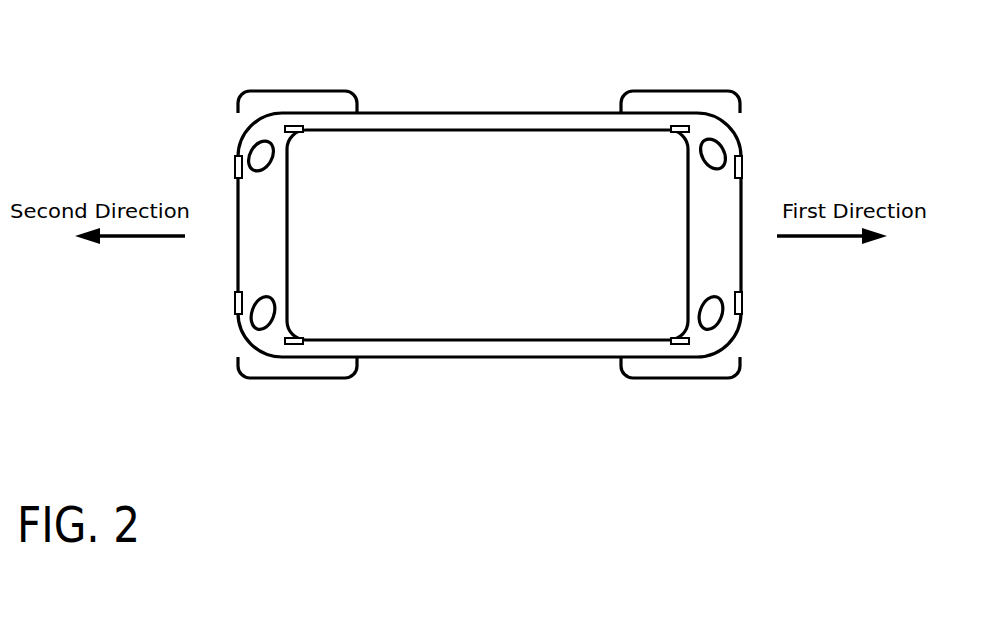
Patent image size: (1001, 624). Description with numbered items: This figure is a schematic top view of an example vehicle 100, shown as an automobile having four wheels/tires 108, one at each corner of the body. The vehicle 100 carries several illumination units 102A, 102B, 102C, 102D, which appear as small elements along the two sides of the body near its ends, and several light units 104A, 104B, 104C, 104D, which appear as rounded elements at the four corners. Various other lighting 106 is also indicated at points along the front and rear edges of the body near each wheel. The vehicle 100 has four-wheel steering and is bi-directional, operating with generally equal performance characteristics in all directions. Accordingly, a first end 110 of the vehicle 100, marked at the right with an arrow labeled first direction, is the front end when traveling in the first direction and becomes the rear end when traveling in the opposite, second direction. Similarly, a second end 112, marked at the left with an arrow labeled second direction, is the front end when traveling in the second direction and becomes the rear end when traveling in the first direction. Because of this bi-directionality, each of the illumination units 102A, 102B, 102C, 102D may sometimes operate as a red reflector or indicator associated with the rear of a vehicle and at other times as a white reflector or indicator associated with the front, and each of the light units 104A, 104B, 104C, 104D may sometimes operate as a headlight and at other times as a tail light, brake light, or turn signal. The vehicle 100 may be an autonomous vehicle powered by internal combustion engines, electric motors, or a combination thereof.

The vehicle 100 is at (507, 223).
The illumination unit 102A is at (743, 305).
The illumination unit 102B is at (743, 163).
The illumination unit 102C is at (234, 305).
The illumination unit 102D is at (234, 165).
The light unit 104A is at (705, 300).
The light unit 104B is at (726, 152).
The light unit 104C is at (274, 298).
The light unit 104D is at (251, 150).
The other lighting 106 is at (293, 127).
The wheels/tires 108 is at (323, 92).
The first end 110 is at (752, 265).
The second end 112 is at (224, 257).